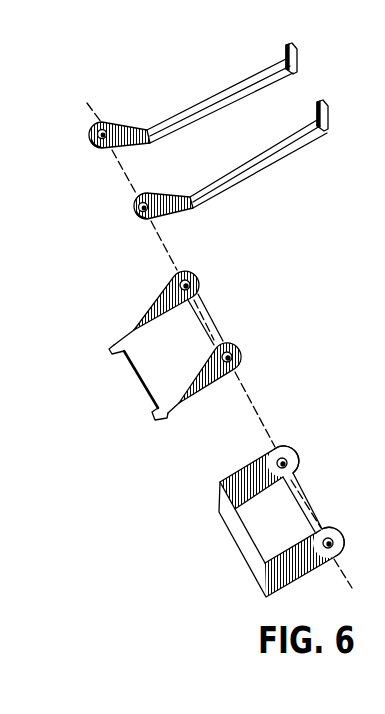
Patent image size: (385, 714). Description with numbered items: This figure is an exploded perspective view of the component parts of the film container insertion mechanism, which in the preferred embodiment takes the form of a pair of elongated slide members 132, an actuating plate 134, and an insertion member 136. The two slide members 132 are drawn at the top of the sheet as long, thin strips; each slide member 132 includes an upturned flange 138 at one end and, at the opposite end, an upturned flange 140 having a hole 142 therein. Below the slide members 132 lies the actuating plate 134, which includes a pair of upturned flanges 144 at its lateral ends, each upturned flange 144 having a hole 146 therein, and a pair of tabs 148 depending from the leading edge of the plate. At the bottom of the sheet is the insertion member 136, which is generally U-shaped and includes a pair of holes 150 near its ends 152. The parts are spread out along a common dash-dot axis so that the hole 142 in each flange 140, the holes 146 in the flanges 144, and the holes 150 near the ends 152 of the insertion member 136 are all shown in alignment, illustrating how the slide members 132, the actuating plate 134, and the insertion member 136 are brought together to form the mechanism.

The slide members 132 is at (202, 85).
The actuating plate 134 is at (206, 311).
The insertion member 136 is at (204, 490).
The upturned flange 138 is at (291, 47).
The upturned flange 140 is at (134, 122).
The hole 142 is at (93, 149).
The upturned flanges 144 is at (184, 272).
The hole 146 is at (200, 283).
The tabs 148 is at (114, 347).
The holes 150 is at (287, 463).
The ends 152 is at (288, 449).